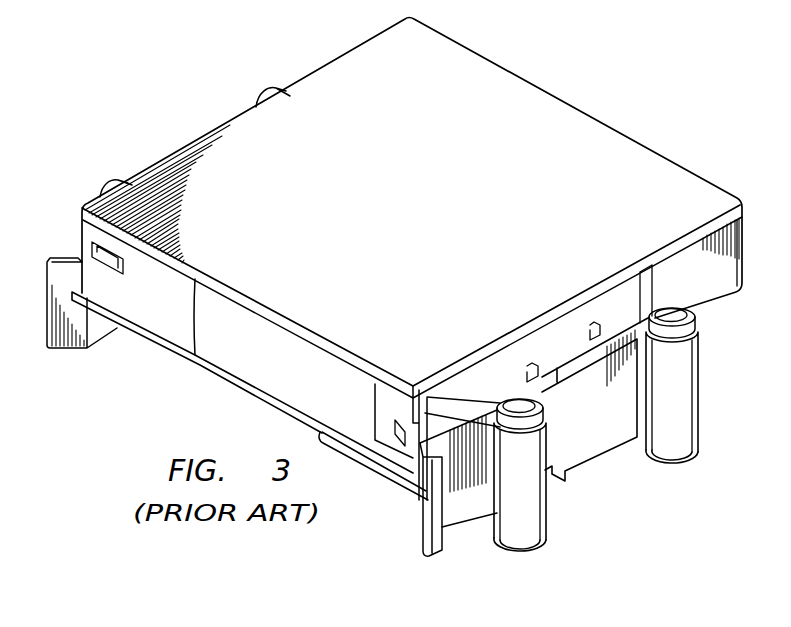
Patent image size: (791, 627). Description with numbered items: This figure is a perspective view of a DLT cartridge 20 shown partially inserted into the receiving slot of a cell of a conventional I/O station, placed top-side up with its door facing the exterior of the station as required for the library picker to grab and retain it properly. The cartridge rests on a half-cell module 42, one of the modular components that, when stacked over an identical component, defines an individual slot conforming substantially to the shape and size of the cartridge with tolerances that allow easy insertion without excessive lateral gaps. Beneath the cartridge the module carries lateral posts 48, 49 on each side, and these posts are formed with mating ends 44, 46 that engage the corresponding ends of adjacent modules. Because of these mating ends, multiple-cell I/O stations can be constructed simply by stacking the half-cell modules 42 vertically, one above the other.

The DLT cartridge 20 is at (617, 96).
The half-cell module 42 is at (600, 443).
The mating end 44 is at (270, 90).
The mating end 46 is at (673, 462).
The lateral post 48 is at (540, 505).
The lateral post 49 is at (693, 381).